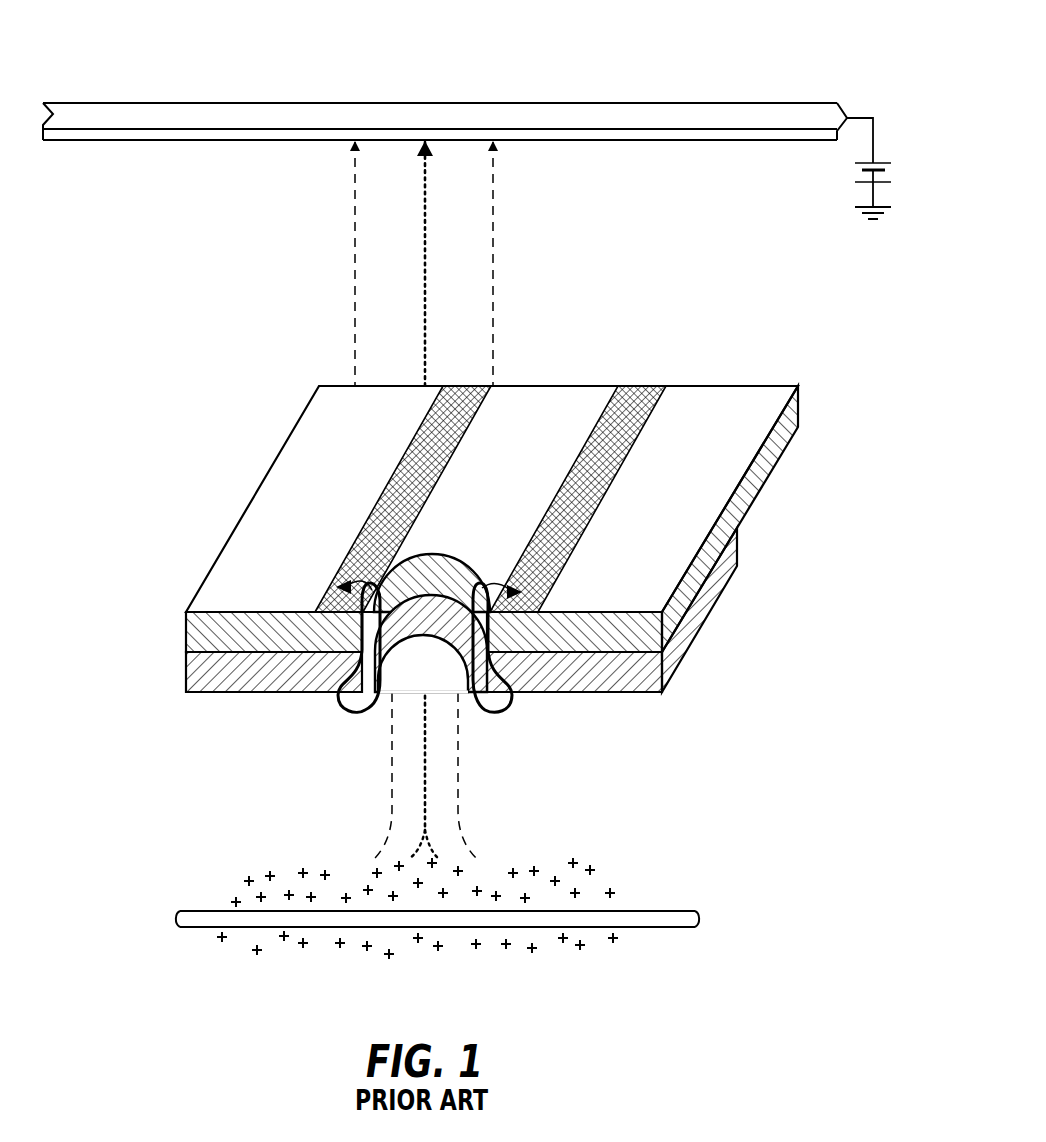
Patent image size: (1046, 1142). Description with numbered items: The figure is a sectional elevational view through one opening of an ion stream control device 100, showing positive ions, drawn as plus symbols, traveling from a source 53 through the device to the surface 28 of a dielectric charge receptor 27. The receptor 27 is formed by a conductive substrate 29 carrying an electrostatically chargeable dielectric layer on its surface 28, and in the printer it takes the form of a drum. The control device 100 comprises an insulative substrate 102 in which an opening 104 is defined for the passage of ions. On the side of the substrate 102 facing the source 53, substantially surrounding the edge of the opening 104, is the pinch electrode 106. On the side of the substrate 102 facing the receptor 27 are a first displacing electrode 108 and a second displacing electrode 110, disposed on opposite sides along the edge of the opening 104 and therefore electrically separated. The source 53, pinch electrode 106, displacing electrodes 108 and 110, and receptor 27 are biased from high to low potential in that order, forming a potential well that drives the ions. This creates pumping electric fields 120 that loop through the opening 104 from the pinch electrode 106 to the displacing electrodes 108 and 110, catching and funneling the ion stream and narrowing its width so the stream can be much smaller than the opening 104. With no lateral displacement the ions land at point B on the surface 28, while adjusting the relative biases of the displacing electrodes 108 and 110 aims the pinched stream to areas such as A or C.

The dielectric charge receptor 27 is at (467, 121).
The surface 28 is at (637, 141).
The conductive substrate 29 is at (681, 112).
The source 53 is at (658, 910).
The control device 100 is at (425, 534).
The insulative substrate 102 is at (222, 590).
The opening 104 is at (448, 650).
The pinch electrode 106 is at (230, 692).
The first displacing electrode 108 is at (466, 386).
The second displacing electrode 110 is at (640, 386).
The pumping electric fields 120 is at (357, 712).